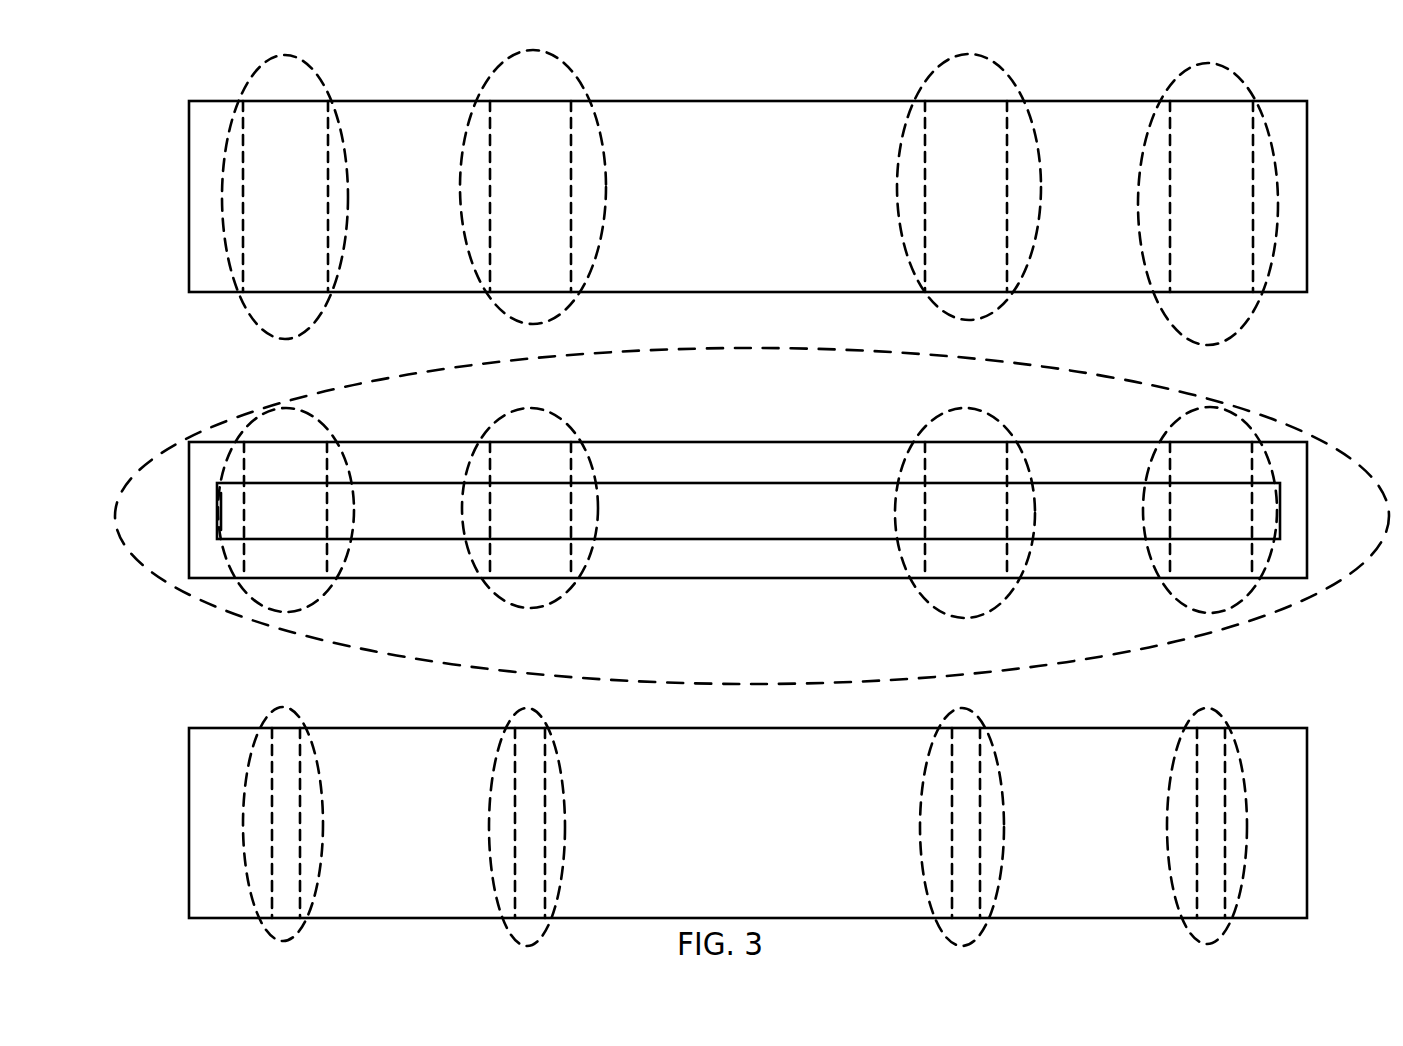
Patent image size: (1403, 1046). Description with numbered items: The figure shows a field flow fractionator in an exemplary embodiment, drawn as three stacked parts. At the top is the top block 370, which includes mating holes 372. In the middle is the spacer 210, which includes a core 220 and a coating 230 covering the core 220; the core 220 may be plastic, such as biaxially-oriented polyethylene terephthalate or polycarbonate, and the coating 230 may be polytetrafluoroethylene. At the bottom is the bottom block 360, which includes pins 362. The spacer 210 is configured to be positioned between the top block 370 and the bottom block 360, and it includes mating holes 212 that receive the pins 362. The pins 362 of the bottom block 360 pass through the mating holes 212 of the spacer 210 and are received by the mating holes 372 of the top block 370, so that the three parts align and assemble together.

The top block 370 is at (189, 118).
The mating holes 372 is at (467, 138).
The spacer 210 is at (190, 436).
The mating holes 212 is at (462, 517).
The core 220 is at (683, 515).
The coating 230 is at (825, 460).
The bottom block 360 is at (189, 832).
The pins 362 is at (488, 838).